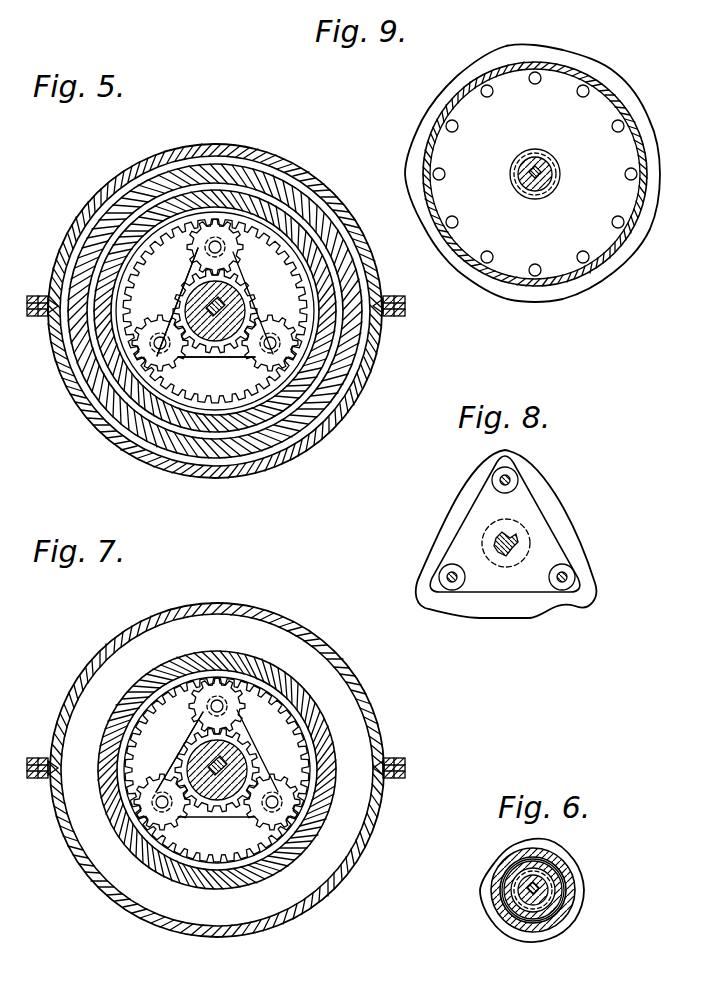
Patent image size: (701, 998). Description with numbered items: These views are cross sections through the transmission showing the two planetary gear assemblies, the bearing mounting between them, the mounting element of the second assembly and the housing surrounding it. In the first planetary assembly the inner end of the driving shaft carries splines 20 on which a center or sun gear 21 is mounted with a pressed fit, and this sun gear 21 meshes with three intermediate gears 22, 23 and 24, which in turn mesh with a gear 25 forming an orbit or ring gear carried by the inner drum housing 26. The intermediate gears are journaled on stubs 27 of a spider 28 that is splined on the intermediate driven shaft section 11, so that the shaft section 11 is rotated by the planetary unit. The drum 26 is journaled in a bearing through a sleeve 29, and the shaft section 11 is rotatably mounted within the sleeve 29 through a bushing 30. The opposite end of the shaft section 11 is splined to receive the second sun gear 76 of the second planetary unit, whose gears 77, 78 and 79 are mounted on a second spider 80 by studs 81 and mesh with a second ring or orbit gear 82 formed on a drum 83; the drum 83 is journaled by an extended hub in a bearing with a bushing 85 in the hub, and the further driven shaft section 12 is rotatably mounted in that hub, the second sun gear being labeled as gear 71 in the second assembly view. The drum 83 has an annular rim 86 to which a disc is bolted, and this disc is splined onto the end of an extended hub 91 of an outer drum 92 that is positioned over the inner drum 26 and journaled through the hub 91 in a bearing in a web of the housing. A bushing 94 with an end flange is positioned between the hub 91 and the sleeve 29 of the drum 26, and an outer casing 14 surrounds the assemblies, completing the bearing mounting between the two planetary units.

In FIG. 5, the intermediate driven shaft section 11 is at (236, 302).
In FIG. 6, the intermediate driven shaft section 11 is at (540, 888).
In FIG. 9, the intermediate driven shaft section 12 is at (535, 170).
In FIG. 8, the intermediate driven shaft section 12 is at (520, 545).
In FIG. 5, the outer casing ring 14 is at (282, 160).
In FIG. 7, the outer casing ring 14 is at (245, 612).
In FIG. 5, the splines 20 is at (196, 266).
In FIG. 5, the sun gear 21 is at (176, 296).
In FIG. 5, the intermediate gear 22 is at (246, 245).
In FIG. 5, the intermediate gear 23 is at (188, 360).
In FIG. 5, the intermediate gear 24 is at (264, 366).
In FIG. 5, the orbit or ring gear 25 is at (293, 281).
In FIG. 5, the inner drum housing 26 is at (172, 362).
In FIG. 5, the stubs 27 is at (253, 355).
In FIG. 5, the spider 28 is at (181, 272).
In FIG. 6, the sleeve 29 is at (545, 853).
In FIG. 6, the bushing 30 is at (552, 912).
In FIG. 7, the sun gear 71 is at (206, 809).
In FIG. 7, the second sun gear 76 is at (192, 730).
In FIG. 7, the gear 77 is at (243, 708).
In FIG. 7, the gear 78 is at (178, 822).
In FIG. 7, the gear 79 is at (262, 825).
In FIG. 7, the second spider 80 is at (257, 747).
In FIG. 8, the second spider 80 is at (543, 528).
In FIG. 7, the studs 81 is at (158, 791).
In FIG. 8, the studs 81 is at (512, 478).
In FIG. 7, the second ring or orbit gear 82 is at (302, 728).
In FIG. 9, the drum 83 is at (574, 72).
In FIG. 8, the drum 83 is at (558, 604).
In FIG. 9, the bushing 85 is at (524, 190).
In FIG. 7, the annular rim 86 is at (285, 678).
In FIG. 6, the extended hub 91 is at (517, 936).
In FIG. 5, the outer drum 92 is at (97, 385).
In FIG. 6, the bushing 94 is at (500, 888).